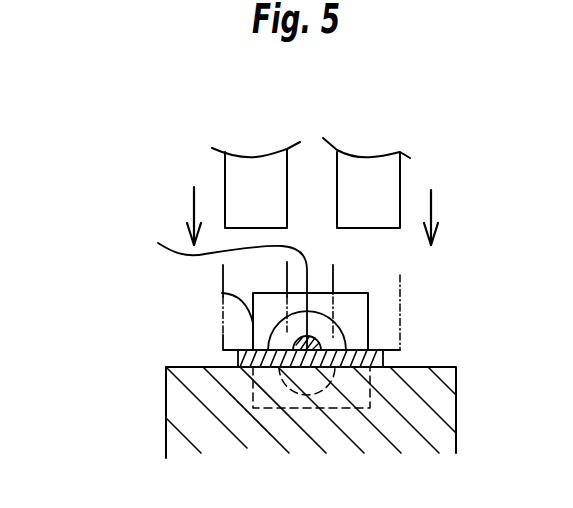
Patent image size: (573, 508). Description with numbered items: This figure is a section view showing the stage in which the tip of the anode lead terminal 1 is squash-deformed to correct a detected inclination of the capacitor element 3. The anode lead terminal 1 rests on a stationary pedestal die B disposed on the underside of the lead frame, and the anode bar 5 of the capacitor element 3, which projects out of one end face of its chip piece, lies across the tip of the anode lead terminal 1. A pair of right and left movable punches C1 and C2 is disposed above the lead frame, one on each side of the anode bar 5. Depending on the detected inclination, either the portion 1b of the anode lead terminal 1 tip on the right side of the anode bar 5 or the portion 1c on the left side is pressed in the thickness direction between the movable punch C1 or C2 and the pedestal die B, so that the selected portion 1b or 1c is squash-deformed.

The movable punch C1 is at (407, 180).
The movable punch C2 is at (215, 177).
The anode bar 5 is at (269, 290).
The capacitor element 3 is at (372, 291).
The portion on the left side 1c is at (222, 293).
The portion on the right side 1b is at (360, 349).
The anode lead terminal 1 is at (385, 365).
The stationary pedestal die B is at (150, 437).